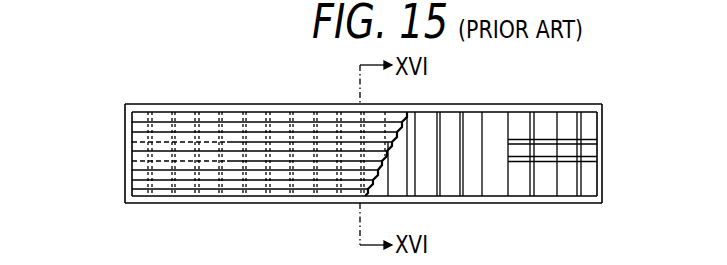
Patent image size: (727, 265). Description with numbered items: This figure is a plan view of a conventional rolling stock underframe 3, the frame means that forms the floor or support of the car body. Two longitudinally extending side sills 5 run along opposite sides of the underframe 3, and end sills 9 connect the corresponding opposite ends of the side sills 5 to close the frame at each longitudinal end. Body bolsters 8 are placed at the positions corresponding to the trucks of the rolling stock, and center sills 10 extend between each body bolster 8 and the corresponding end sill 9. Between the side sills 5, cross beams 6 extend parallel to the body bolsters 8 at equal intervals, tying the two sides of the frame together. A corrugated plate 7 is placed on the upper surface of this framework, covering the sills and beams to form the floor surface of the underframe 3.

The underframe 3 is at (257, 112).
The side sill 5 is at (478, 203).
The cross beam 6 is at (443, 122).
The corrugated plate 7 is at (257, 184).
The body bolster 8 is at (495, 122).
The end sill 9 is at (125, 179).
The center sill 10 is at (540, 163).